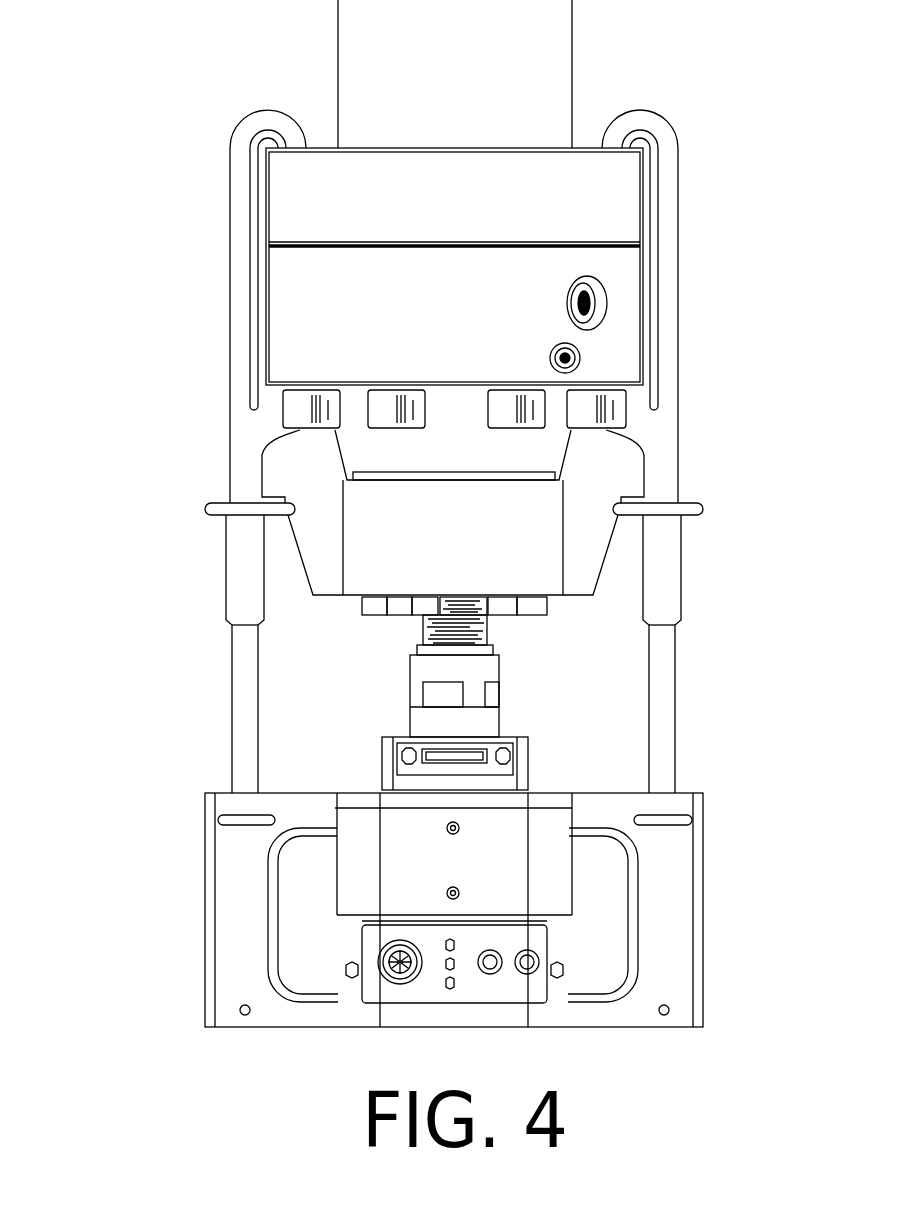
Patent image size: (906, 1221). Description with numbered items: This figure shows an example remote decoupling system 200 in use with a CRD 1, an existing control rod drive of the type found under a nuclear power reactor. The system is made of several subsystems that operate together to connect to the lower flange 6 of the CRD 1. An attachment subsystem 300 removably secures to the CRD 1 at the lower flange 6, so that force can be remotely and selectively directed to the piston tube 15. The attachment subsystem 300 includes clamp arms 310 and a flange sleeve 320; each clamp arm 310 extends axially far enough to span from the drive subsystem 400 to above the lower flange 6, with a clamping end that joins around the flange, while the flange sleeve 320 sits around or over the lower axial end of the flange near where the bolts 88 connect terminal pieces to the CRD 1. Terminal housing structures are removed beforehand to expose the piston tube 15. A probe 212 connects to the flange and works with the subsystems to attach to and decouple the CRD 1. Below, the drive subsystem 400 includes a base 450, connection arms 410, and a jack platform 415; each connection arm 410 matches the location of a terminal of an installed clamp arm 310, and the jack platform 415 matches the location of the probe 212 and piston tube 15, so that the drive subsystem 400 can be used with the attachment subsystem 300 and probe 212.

The CRD 1 is at (454, 66).
The filling apparatus 200 is at (783, 66).
The lower flange 6 is at (322, 281).
The bolts 88 is at (390, 410).
The attachment subsystem 300 is at (125, 450).
The clamp arm 310 is at (245, 438).
The flange sleeve 320 is at (380, 552).
The piston tube 15 is at (505, 620).
The probe 212 is at (487, 680).
The jack platform 415 is at (390, 757).
The drive subsystem 400 is at (100, 757).
The base 450 is at (410, 858).
The connection arm 410 is at (228, 925).